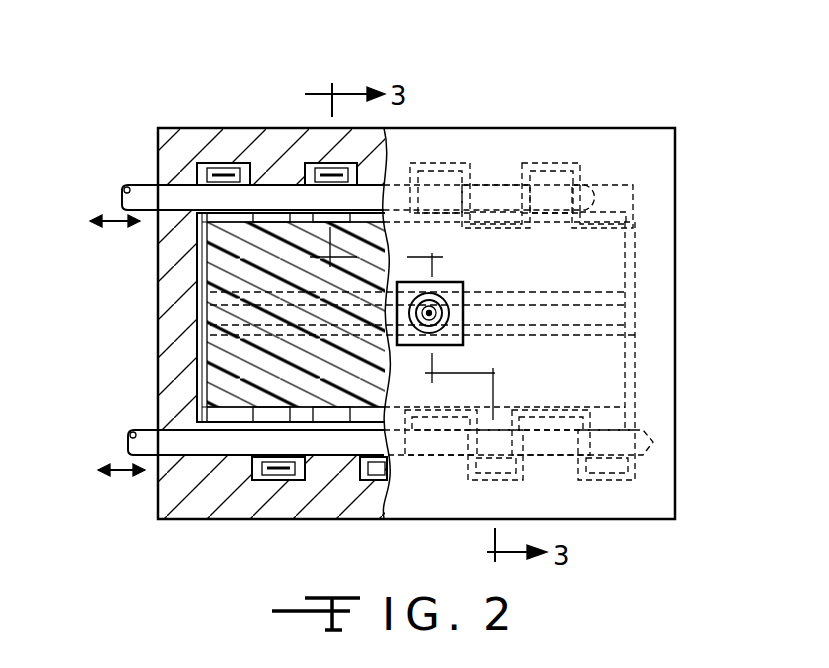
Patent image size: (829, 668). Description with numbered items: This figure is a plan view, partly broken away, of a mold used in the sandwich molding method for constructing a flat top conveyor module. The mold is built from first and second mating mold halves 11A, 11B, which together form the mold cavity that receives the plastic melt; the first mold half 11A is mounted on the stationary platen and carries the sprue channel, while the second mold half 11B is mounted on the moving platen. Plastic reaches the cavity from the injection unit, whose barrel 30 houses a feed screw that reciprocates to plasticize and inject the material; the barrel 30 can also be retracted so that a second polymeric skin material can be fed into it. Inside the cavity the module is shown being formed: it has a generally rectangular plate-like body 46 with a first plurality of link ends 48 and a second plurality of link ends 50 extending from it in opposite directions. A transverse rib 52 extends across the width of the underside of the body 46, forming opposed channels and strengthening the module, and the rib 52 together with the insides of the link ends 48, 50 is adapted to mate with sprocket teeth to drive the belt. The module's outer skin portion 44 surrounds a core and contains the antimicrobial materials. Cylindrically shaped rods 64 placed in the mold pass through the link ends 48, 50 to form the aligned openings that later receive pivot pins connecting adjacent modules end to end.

The first mold half 11A is at (650, 167).
The second mold half 11B is at (228, 146).
The barrel 30 is at (445, 300).
The skin portion 44 is at (200, 245).
The plate-like body 46 is at (200, 263).
The first plurality of link ends 48 is at (282, 467).
The second plurality of link ends 50 is at (237, 165).
The transverse rib 52 is at (205, 316).
The rods 64 is at (142, 192).